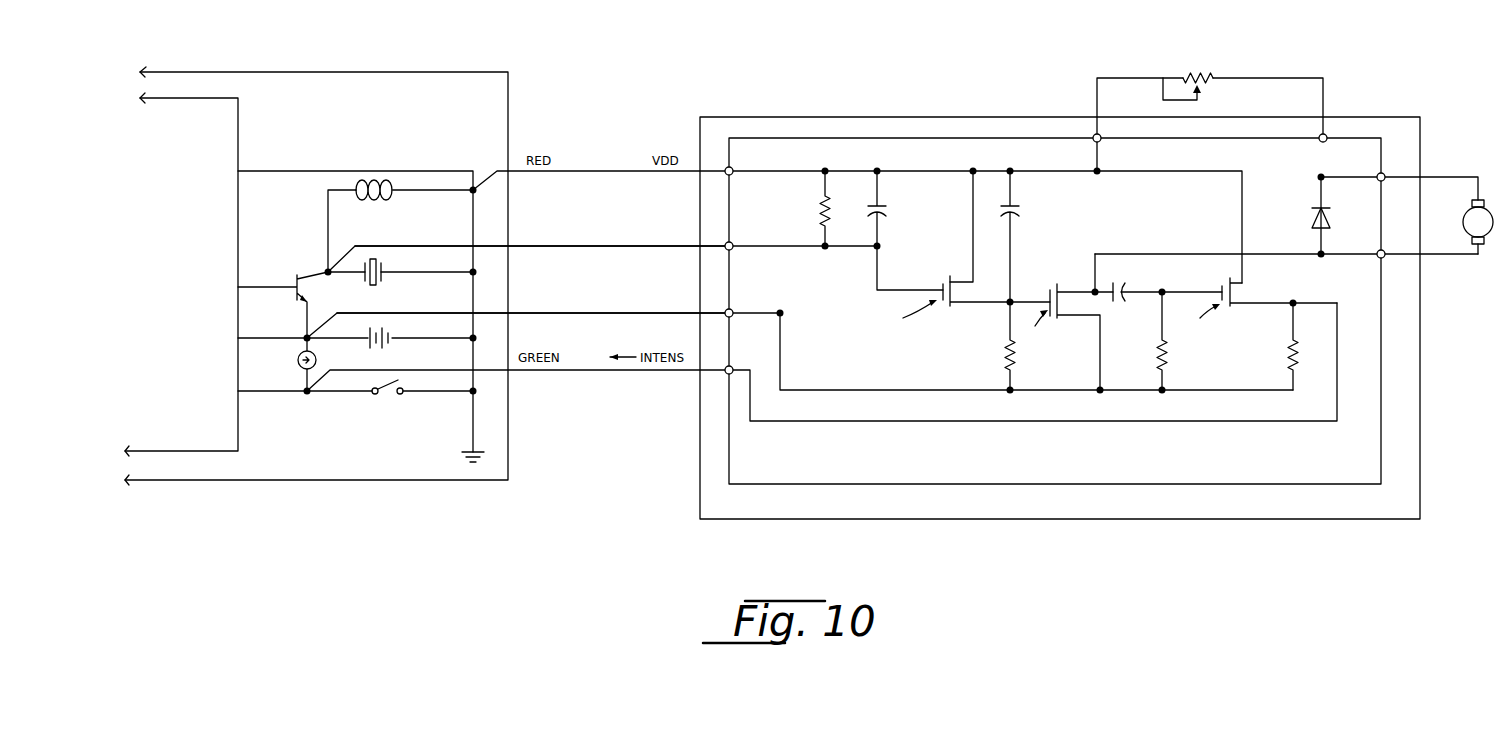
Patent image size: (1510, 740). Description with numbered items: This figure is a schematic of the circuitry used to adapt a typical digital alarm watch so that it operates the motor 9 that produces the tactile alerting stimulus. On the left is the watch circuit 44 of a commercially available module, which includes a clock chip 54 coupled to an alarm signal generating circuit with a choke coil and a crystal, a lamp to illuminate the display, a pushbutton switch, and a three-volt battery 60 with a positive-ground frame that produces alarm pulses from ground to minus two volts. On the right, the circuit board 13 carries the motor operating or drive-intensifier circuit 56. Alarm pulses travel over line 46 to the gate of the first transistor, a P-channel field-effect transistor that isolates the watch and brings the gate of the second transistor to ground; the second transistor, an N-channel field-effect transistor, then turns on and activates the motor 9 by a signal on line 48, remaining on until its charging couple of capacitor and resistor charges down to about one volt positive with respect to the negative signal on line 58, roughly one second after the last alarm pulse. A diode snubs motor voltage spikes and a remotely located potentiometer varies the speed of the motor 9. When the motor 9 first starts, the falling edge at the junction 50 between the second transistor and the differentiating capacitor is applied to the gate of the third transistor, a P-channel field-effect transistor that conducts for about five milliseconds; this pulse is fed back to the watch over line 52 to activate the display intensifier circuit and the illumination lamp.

The motor 9 is at (1415, 229).
The circuit board 13 is at (1102, 309).
The watch circuit 44 is at (427, 267).
The line 46 is at (542, 250).
The line 48 is at (1286, 242).
The Q2/C3 junction 50 is at (1134, 277).
The line 52 is at (1036, 364).
The clock chip 54 is at (181, 274).
The drive-intensifier circuit 56 is at (1055, 324).
The line 58 is at (533, 317).
The battery 60 is at (355, 340).